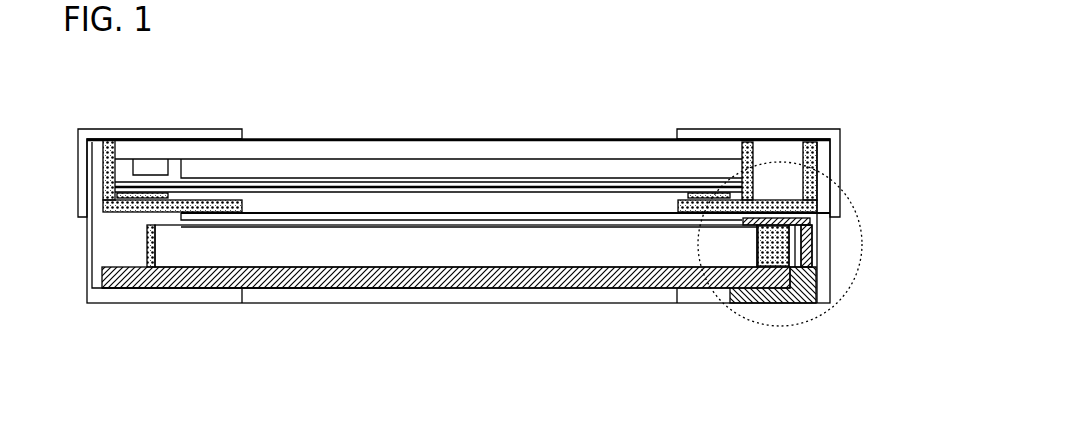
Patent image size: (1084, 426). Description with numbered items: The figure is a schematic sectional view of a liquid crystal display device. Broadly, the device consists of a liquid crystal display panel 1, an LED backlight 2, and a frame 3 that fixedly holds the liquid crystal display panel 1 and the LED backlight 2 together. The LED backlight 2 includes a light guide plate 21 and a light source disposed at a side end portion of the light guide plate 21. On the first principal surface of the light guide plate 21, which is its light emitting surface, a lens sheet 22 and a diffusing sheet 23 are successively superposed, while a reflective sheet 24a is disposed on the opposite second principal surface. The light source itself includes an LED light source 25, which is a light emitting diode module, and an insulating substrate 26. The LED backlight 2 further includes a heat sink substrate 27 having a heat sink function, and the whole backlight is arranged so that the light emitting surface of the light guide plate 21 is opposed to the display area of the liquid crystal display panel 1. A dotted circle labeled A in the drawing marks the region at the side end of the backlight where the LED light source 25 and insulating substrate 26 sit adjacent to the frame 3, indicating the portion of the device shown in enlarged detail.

The liquid crystal display panel 1 is at (364, 140).
The LED backlight 2 is at (452, 214).
The frame 3 is at (840, 150).
The light guide plate 21 is at (433, 243).
The lens sheet 22 is at (495, 222).
The diffusing sheet 23 is at (540, 212).
The reflective sheet 24a is at (407, 288).
The LED light source 25 is at (790, 250).
The insulating substrate 26 is at (775, 303).
The heat sink substrate 27 is at (582, 288).
The enlarged region A is at (838, 303).